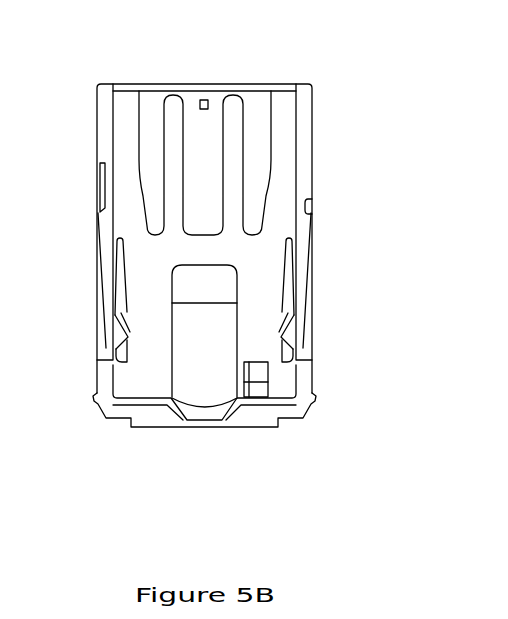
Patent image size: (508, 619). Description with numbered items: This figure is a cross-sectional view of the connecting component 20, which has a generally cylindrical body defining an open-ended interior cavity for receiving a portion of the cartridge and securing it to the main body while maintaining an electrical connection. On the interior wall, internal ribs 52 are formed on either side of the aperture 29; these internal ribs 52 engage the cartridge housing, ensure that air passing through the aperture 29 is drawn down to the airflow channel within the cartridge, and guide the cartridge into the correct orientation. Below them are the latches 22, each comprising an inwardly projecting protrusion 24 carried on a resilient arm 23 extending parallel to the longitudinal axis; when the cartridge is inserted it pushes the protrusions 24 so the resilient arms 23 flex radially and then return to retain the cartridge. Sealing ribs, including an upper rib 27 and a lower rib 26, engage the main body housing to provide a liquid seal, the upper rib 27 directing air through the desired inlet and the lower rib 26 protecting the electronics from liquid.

The connecting component 20 is at (318, 142).
The latch 22 is at (105, 308).
The resilient arm 23 is at (114, 281).
The protrusion 24 is at (112, 334).
The lower rib 26 is at (96, 395).
The upper rib 27 is at (97, 205).
The aperture 29 is at (203, 99).
The internal rib 52 is at (172, 207).